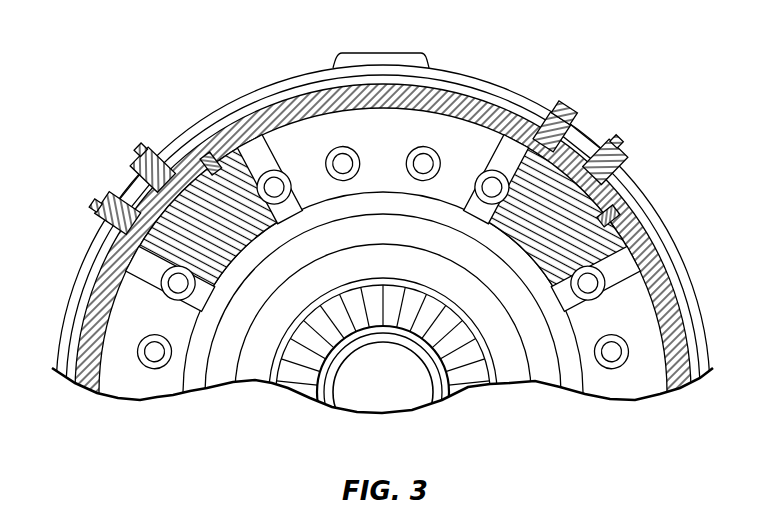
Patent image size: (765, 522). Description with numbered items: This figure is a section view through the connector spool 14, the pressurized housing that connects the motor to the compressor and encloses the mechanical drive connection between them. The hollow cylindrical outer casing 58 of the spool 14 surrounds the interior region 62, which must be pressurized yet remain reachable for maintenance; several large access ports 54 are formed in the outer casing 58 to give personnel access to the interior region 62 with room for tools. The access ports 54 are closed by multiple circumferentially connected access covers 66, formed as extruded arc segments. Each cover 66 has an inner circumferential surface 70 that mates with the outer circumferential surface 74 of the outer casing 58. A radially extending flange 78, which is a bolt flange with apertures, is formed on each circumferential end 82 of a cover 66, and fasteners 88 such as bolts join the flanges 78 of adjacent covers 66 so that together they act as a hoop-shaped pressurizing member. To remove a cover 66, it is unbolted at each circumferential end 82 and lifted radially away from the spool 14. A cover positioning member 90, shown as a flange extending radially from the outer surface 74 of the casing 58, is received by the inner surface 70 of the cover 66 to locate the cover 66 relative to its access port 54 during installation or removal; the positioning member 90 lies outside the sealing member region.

The connector spool 14 is at (112, 68).
The access port 54 is at (494, 150).
The outer casing 58 is at (185, 233).
The interior region 62 is at (307, 132).
The access cover 66 is at (377, 92).
The inner circumferential surface 70 is at (540, 118).
The outer circumferential surface 74 is at (630, 252).
The radially extending flange 78 is at (142, 160).
The circumferential end 82 is at (172, 157).
The fastener 88 is at (122, 186).
The cover positioning member 90 is at (212, 158).